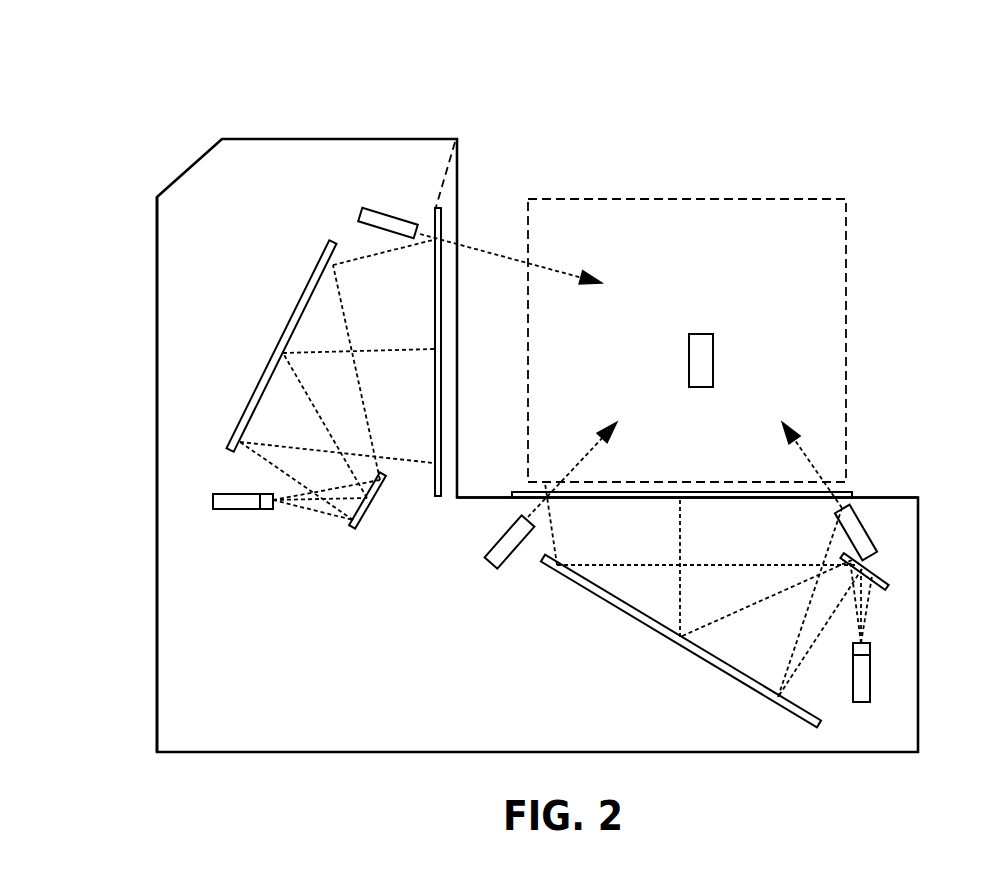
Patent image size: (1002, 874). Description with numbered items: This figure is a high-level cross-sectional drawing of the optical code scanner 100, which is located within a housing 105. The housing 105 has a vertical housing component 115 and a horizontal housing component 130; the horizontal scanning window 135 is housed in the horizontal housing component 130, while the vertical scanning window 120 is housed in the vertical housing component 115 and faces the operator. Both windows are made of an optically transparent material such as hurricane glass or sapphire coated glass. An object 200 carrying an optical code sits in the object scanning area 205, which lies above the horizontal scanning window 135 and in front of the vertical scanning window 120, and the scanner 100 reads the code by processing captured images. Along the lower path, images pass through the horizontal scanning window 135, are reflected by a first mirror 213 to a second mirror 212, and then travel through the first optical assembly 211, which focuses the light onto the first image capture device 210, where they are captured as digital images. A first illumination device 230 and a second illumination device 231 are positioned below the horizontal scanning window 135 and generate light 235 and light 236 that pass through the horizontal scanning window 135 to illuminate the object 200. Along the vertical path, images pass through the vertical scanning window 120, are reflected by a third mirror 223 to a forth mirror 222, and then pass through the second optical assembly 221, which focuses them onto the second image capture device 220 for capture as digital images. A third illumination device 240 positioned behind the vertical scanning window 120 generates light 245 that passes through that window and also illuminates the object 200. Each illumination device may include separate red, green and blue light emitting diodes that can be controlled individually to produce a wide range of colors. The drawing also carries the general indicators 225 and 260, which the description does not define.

The optical code scanner 100 is at (145, 68).
The housing 105 is at (205, 708).
The vertical housing component 115 is at (428, 138).
The vertical scanning window 120 is at (436, 205).
The horizontal housing component 130 is at (895, 497).
The horizontal scanning window 135 is at (848, 490).
The object 200 is at (713, 356).
The object scanning area 205 is at (731, 199).
The first image capture device 210 is at (871, 688).
The first optical assembly 211 is at (872, 648).
The second mirror 212 is at (882, 572).
The first mirror 213 is at (626, 612).
The second image capture device 220 is at (228, 510).
The second optical assembly 221 is at (267, 510).
The forth mirror 222 is at (367, 522).
The third mirror 223 is at (250, 397).
The optical path 225 is at (895, 100).
The first illumination device 230 is at (485, 558).
The second illumination device 231 is at (868, 530).
The light 235 is at (540, 506).
The light 236 is at (808, 460).
The third illumination device 240 is at (391, 207).
The light 245 is at (483, 248).
The side wall 260 is at (157, 473).